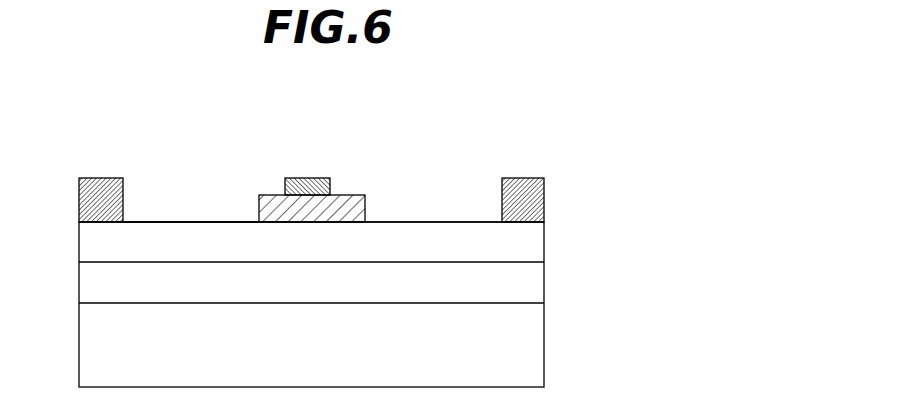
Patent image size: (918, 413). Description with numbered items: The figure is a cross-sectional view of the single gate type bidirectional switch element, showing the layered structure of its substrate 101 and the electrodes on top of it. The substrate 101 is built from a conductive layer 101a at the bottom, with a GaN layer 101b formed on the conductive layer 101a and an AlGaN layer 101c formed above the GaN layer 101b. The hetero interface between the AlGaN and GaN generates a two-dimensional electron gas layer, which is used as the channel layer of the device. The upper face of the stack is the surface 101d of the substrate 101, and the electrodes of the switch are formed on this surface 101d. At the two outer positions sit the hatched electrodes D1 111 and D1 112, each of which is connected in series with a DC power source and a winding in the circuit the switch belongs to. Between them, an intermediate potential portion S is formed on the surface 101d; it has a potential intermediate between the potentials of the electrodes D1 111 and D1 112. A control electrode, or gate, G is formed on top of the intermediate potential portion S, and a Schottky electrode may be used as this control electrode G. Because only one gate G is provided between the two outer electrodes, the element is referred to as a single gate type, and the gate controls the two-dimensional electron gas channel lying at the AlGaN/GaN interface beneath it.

The substrate 101 is at (385, 304).
The conductive layer 101a is at (533, 330).
The GaN layer 101b is at (533, 282).
The AlGaN layer 101c is at (533, 240).
The surface of the substrate 101d is at (187, 222).
The first electrode 111 is at (522, 178).
The first electrode 112 is at (98, 178).
The control electrode G is at (306, 178).
The intermediate potential portion S is at (350, 195).